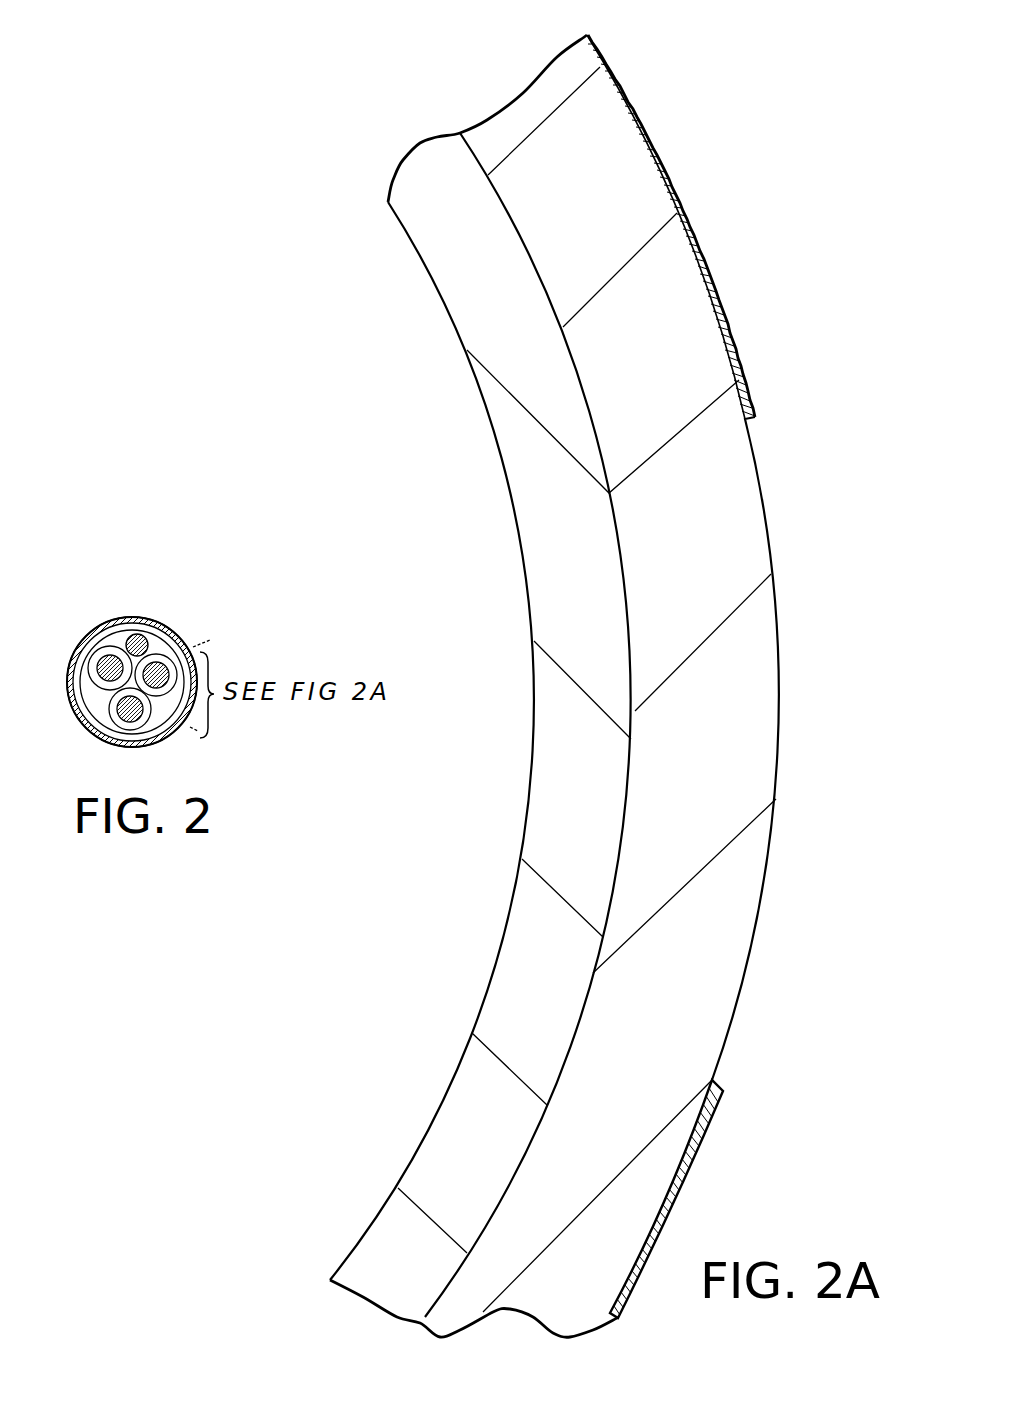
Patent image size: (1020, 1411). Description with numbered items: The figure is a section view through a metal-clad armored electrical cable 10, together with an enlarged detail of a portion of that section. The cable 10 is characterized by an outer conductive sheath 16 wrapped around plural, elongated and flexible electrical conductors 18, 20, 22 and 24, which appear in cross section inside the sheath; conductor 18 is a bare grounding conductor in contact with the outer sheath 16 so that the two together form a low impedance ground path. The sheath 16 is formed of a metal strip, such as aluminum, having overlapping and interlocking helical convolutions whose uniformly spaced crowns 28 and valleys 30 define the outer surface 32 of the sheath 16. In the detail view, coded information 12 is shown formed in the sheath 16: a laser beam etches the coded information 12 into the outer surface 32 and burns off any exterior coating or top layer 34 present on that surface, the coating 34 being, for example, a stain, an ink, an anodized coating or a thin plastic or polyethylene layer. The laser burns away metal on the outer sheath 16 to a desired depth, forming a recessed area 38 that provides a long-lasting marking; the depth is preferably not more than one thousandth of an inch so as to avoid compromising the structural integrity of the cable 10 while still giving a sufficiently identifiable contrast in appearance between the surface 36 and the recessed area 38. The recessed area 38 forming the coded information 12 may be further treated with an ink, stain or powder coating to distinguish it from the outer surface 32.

In FIG. 2A, the cable 10 is at (806, 114).
In FIG. 2, the cable 10 is at (98, 582).
In FIG. 2A, the coded information 12 is at (840, 489).
In FIG. 2A, the outer conductive sheath 16 is at (698, 1155).
In FIG. 2, the outer conductive sheath 16 is at (170, 735).
In FIG. 2, the conductor 18 is at (145, 643).
In FIG. 2, the conductor 20 is at (100, 668).
In FIG. 2, the conductor 22 is at (148, 668).
In FIG. 2, the conductor 24 is at (112, 733).
In FIG. 2A, the crowns 28 is at (640, 118).
In FIG. 2A, the valleys 30 is at (440, 302).
In FIG. 2A, the outer surface 32 is at (562, 148).
In FIG. 2A, the coating 34 is at (728, 310).
In FIG. 2A, the surface 36 is at (678, 190).
In FIG. 2A, the recessed area 38 is at (792, 694).